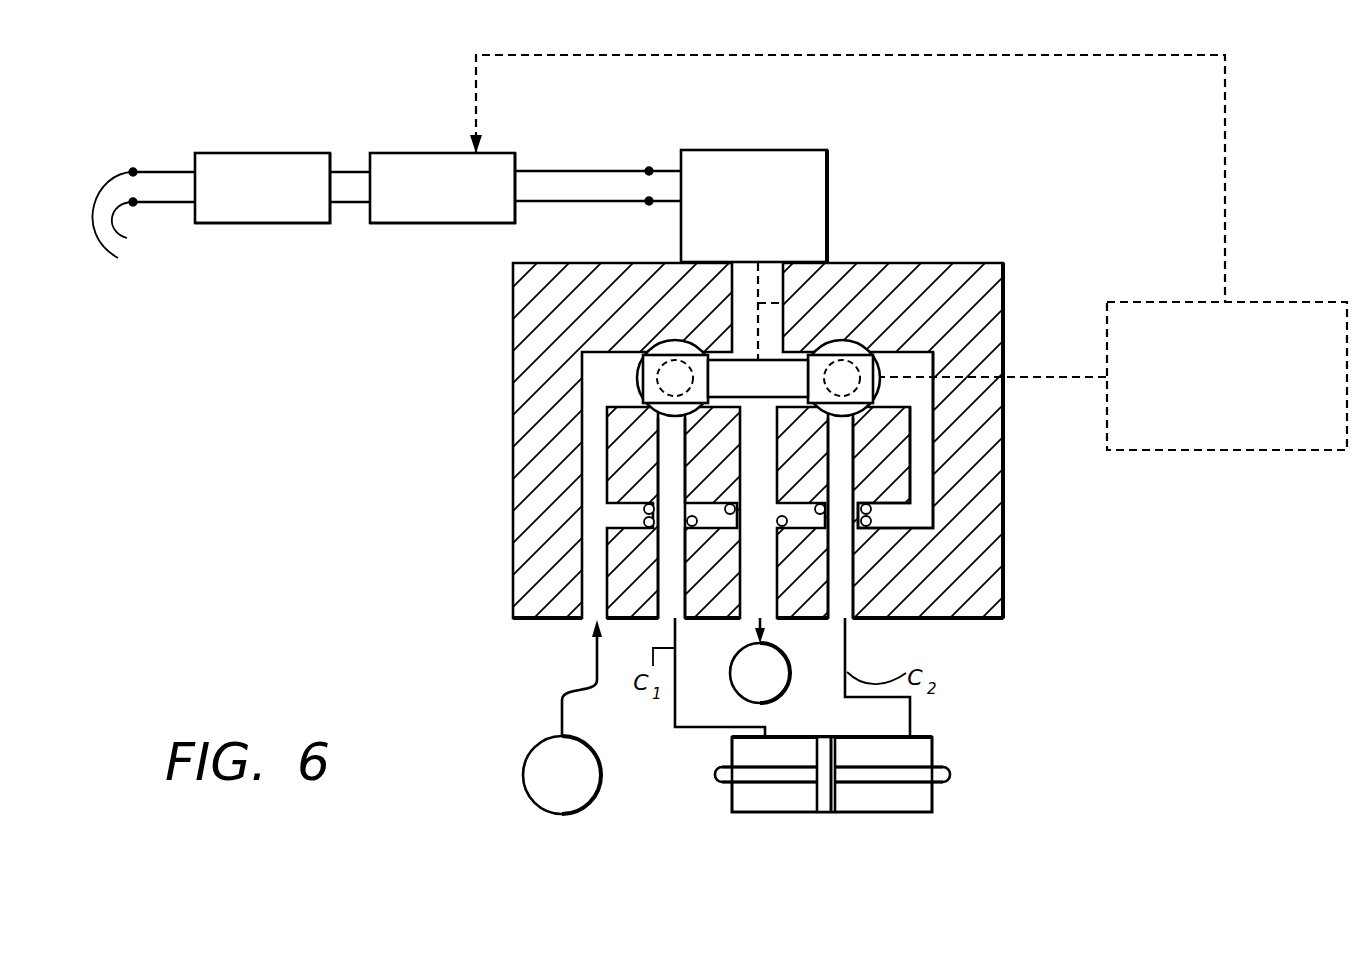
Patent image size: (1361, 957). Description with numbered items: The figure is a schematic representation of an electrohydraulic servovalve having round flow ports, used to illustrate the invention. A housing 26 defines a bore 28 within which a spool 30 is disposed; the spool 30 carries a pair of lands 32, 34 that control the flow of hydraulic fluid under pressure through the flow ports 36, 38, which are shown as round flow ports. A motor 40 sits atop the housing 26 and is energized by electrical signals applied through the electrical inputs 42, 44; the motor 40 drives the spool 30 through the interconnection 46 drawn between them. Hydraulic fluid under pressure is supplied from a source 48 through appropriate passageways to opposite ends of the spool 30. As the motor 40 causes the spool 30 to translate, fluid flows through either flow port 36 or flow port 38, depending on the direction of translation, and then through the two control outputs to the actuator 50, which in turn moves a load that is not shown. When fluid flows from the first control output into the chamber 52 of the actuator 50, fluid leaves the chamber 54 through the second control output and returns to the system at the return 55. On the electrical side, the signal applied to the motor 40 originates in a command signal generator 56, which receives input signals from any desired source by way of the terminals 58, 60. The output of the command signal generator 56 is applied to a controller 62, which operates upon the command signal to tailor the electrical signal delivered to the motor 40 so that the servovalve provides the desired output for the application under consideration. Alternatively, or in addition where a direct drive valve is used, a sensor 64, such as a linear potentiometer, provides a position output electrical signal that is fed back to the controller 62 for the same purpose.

The housing 26 is at (1003, 300).
The bore 28 is at (945, 372).
The spool 30 is at (743, 390).
The land 32 is at (640, 382).
The land 34 is at (877, 383).
The flow port 36 is at (657, 438).
The flow port 38 is at (855, 427).
The motor 40 is at (738, 150).
The electrical input 42 is at (649, 171).
The electrical input 44 is at (649, 201).
The interconnection 46 is at (830, 302).
The source 48 is at (523, 775).
The actuator 50 is at (853, 813).
The chamber 52 is at (763, 803).
The chamber 54 is at (912, 800).
The return 55 is at (791, 677).
The command signal generator 56 is at (253, 153).
The terminal 58 is at (119, 223).
The terminal 60 is at (133, 227).
The controller 62 is at (428, 153).
The sensor 64 is at (1262, 450).